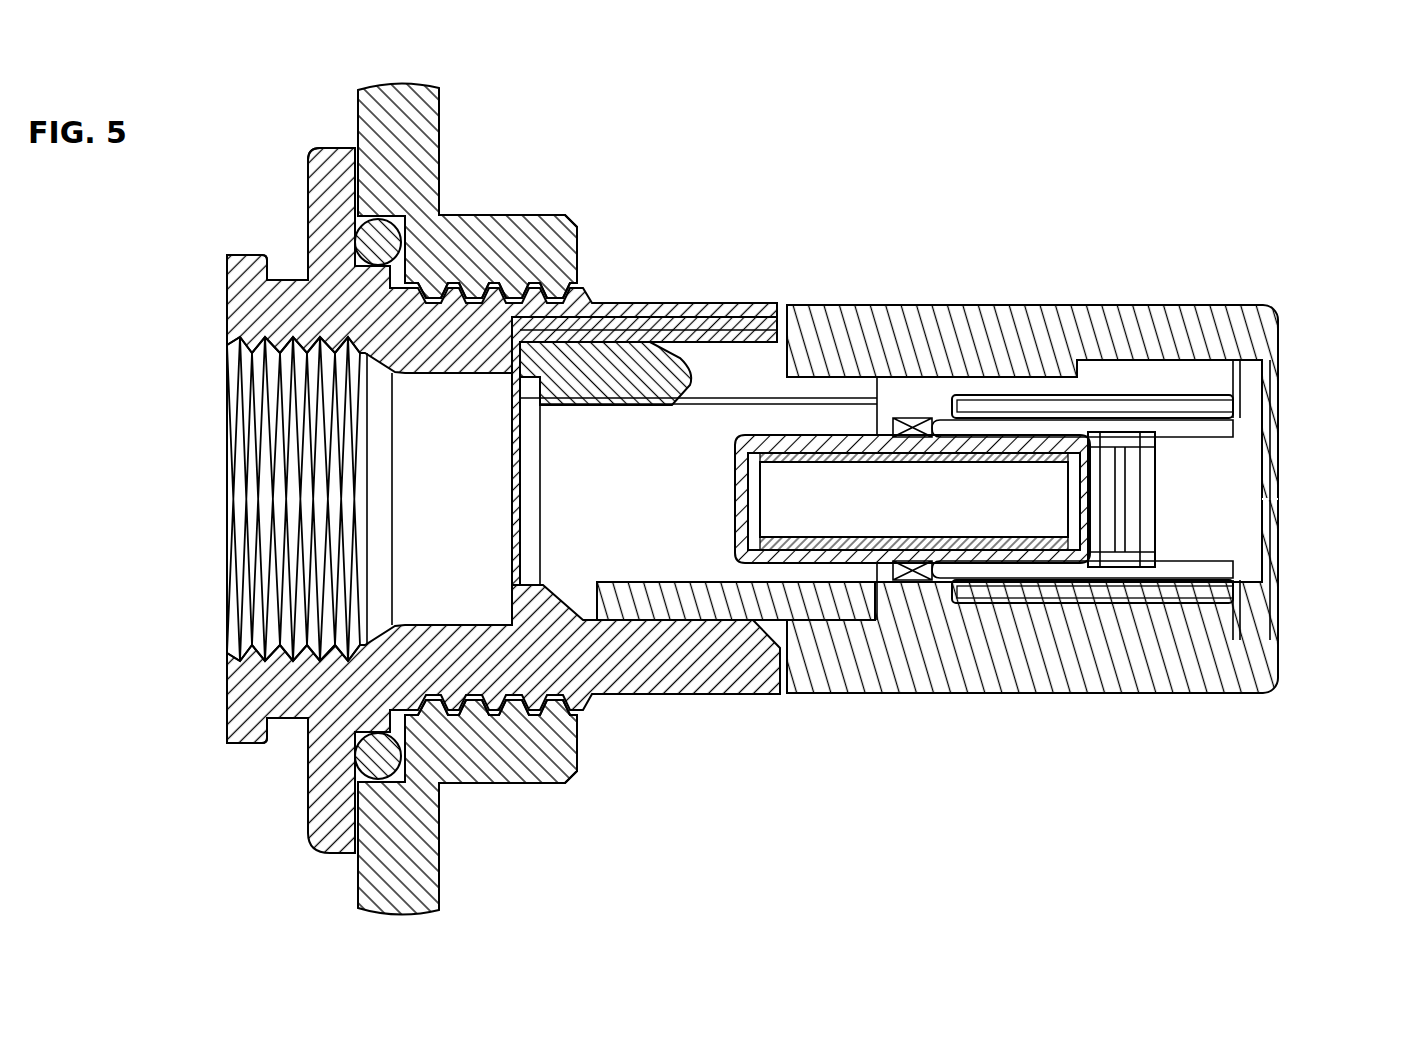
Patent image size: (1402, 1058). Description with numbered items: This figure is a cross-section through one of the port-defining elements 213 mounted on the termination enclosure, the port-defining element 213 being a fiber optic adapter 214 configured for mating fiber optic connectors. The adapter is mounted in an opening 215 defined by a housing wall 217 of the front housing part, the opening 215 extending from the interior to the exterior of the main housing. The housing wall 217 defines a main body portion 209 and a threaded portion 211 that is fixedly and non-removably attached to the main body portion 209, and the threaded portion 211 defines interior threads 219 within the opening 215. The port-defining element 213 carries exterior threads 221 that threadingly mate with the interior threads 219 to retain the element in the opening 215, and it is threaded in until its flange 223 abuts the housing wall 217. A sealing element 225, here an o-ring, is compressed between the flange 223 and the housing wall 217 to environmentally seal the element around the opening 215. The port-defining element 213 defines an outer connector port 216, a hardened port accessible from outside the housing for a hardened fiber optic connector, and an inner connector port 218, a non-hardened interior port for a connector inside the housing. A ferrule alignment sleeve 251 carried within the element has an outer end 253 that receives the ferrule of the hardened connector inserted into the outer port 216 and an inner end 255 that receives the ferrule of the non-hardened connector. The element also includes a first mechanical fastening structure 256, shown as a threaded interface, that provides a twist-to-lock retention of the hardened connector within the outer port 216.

The main body portion 209 is at (425, 862).
The threaded portion 211 is at (452, 228).
The port-defining element 213 is at (235, 715).
The fiber optic adapter 214 is at (638, 283).
The opening 215 is at (405, 296).
The outer connector port 216 is at (190, 409).
The housing wall 217 is at (428, 122).
The inner connector port 218 is at (1297, 379).
The interior threads 219 is at (535, 722).
The exterior threads 221 is at (497, 296).
The flange 223 is at (330, 175).
The sealing element 225 is at (372, 765).
The ferrule alignment sleeve 251 is at (835, 535).
The outer end 253 is at (735, 520).
The inner end 255 is at (1068, 515).
The first mechanical fastening structure 256 is at (265, 628).